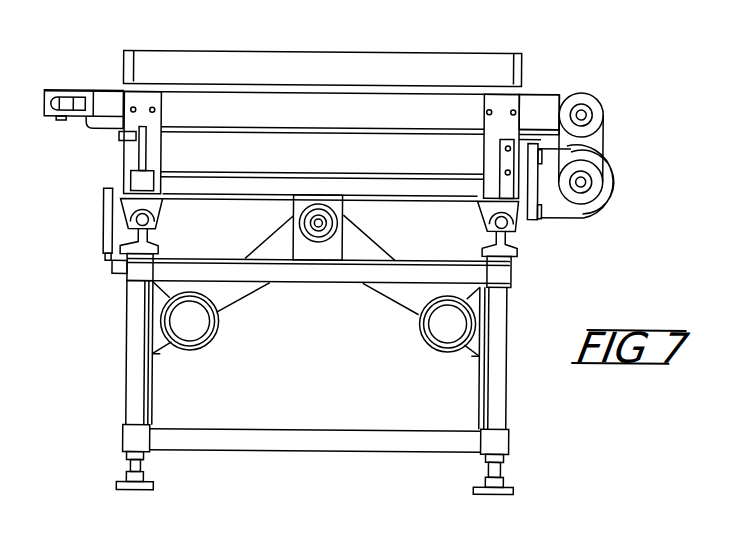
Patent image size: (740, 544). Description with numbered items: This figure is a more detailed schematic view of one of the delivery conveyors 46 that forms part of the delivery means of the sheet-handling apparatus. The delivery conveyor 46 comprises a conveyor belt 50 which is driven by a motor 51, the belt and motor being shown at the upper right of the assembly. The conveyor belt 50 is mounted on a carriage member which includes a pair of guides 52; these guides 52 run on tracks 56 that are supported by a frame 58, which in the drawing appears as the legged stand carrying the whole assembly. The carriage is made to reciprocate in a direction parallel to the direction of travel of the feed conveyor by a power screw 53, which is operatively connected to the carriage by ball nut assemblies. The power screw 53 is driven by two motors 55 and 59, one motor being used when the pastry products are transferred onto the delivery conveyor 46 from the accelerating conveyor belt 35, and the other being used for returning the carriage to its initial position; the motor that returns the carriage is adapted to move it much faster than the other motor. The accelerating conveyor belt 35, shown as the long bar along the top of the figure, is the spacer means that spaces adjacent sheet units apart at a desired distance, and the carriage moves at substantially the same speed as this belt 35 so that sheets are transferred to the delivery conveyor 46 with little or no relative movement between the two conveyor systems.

The accelerating conveyor belt 35 is at (492, 71).
The delivery conveyor 46 is at (622, 130).
The conveyor belt 50 is at (547, 93).
The motor 51 is at (616, 204).
The guides 52 is at (127, 212).
The power screw 53 is at (322, 224).
The motor 55 is at (212, 343).
The tracks 56 is at (138, 239).
The frame 58 is at (137, 290).
The motor 59 is at (422, 342).